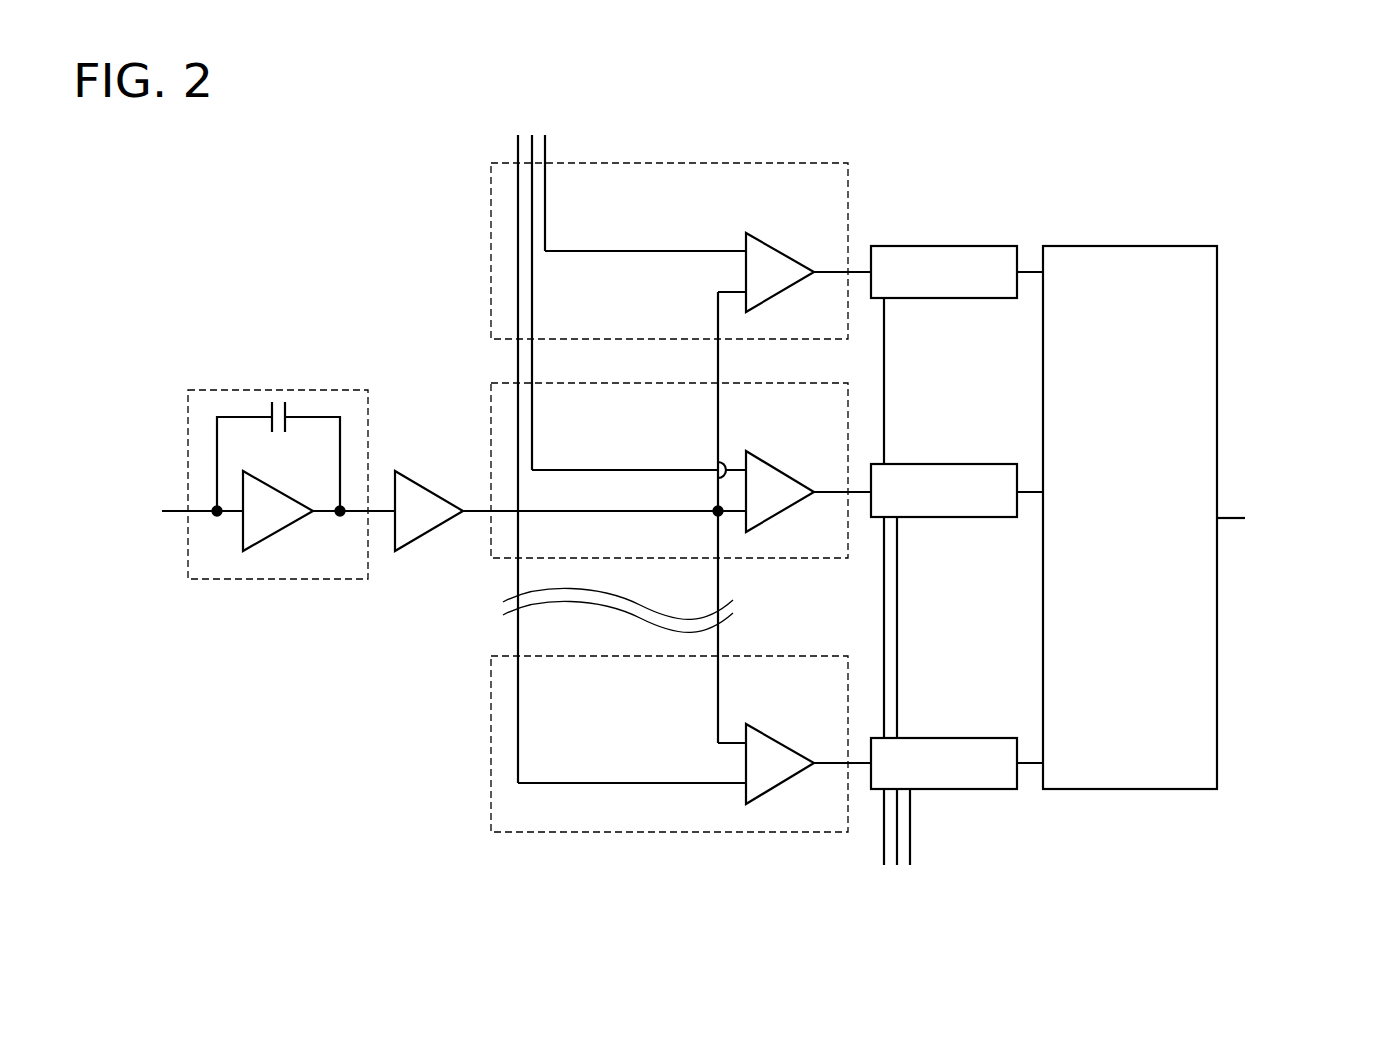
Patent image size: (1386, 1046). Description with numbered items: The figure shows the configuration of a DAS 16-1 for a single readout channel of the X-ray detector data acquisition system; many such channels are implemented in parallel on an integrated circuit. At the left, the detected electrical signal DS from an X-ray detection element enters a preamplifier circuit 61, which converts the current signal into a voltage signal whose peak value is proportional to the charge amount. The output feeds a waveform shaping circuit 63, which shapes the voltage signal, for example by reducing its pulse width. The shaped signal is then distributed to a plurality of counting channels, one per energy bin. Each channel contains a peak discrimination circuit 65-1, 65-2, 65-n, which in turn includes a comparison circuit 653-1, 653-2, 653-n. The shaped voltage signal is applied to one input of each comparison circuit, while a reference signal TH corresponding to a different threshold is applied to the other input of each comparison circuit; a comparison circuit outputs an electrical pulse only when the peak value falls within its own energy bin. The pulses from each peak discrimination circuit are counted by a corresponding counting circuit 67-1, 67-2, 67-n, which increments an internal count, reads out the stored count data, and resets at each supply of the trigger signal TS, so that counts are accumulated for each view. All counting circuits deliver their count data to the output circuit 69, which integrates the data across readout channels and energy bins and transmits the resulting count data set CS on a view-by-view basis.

The DAS 16-1 is at (735, 108).
The preamplifier circuit 61 is at (310, 390).
The waveform shaping circuit 63 is at (433, 485).
The peak discrimination circuit 65-1 is at (763, 163).
The peak discrimination circuit 65-2 is at (763, 383).
The peak discrimination circuit 65-n is at (763, 656).
The comparison circuit 653-1 is at (783, 251).
The comparison circuit 653-2 is at (783, 470).
The comparison circuit 653-n is at (783, 742).
The counting circuit 67-1 is at (933, 246).
The counting circuit 67-2 is at (933, 464).
The counting circuit 67-n is at (933, 738).
The output circuit 69 is at (1160, 246).